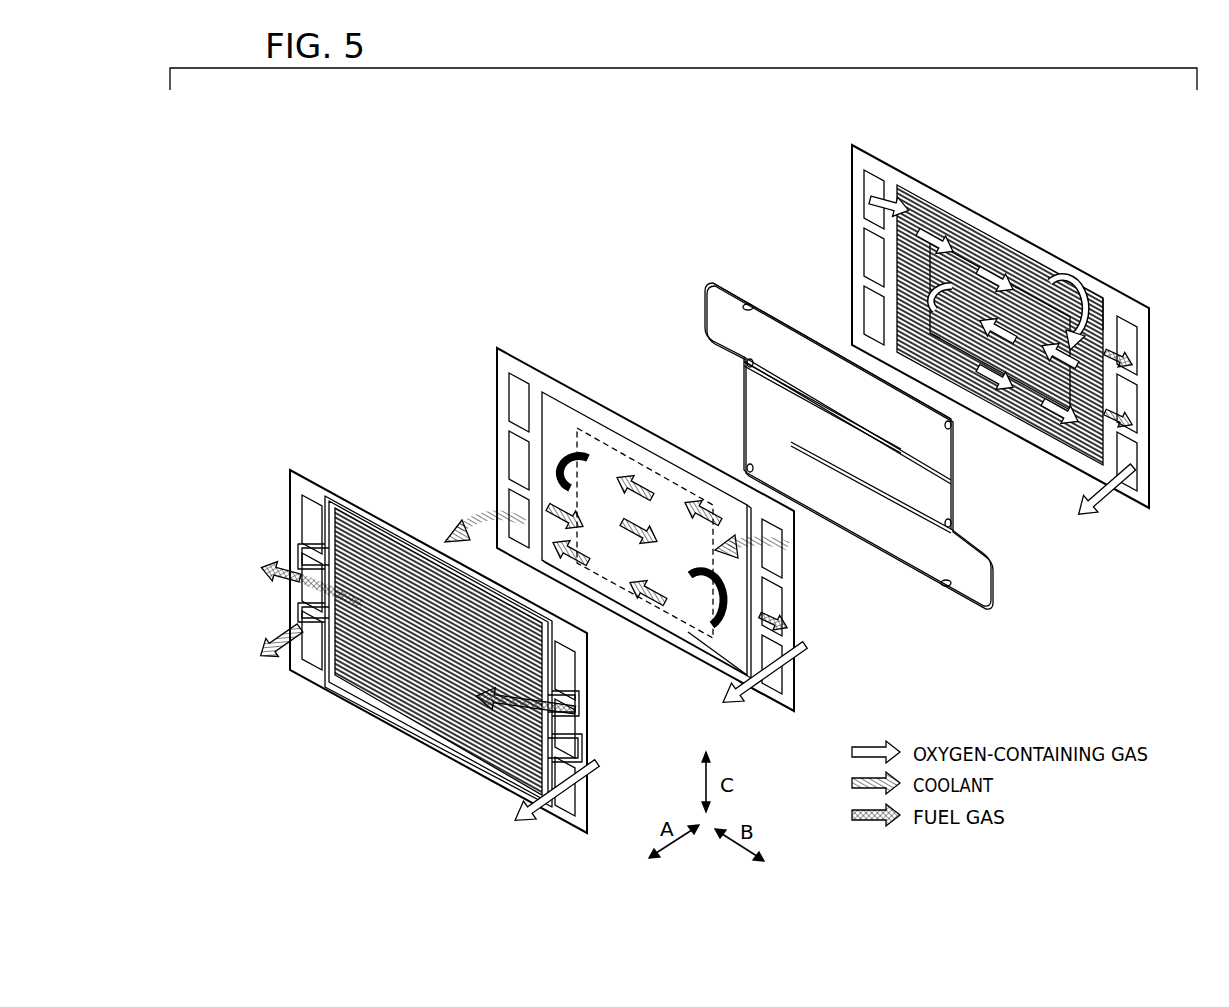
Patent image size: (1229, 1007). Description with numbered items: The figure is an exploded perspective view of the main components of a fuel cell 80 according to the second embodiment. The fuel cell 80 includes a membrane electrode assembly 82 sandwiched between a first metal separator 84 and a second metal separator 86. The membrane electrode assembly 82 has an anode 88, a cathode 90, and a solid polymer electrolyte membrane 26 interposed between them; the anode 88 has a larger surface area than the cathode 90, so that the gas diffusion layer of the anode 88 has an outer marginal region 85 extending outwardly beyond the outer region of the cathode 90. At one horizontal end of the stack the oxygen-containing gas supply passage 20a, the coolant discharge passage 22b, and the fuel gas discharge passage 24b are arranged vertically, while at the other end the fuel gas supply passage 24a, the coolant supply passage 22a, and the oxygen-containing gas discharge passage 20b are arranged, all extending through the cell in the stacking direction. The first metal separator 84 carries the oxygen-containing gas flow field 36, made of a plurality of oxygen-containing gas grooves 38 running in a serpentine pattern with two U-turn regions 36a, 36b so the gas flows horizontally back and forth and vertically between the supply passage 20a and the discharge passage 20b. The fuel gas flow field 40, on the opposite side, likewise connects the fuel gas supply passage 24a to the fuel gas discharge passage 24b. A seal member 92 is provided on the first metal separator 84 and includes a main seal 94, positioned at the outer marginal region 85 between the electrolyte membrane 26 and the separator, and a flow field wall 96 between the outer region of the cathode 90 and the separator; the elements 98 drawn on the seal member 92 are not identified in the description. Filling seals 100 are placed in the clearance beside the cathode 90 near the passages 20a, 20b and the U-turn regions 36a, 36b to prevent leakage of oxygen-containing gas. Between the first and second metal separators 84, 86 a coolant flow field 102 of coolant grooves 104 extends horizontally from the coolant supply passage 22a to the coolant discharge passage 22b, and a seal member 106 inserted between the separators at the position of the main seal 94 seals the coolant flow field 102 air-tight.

The fuel cell 80 is at (601, 256).
The membrane electrode assembly 82 is at (495, 345).
The first metal separator 84 is at (851, 142).
The second metal separator 86 is at (288, 466).
The anode 88 is at (560, 425).
The cathode 90 is at (662, 468).
The outer marginal region 85 is at (688, 632).
The solid polymer electrolyte membrane 26 is at (763, 700).
The seal member 92 is at (707, 280).
The main seal 94 is at (761, 302).
The flow field wall 96 is at (787, 336).
The bridge 98 is at (813, 450).
The filling seals 100 is at (745, 309).
The oxygen-containing gas flow field 36 is at (975, 237).
The U-turn region 36a is at (1108, 318).
The U-turn region 36b is at (935, 330).
The oxygen-containing gas grooves 38 is at (1070, 305).
The fuel gas flow field 40 is at (412, 528).
The coolant flow field 102 is at (368, 530).
The coolant grooves 104 is at (358, 685).
The seal member 106 is at (392, 703).
The oxygen-containing gas supply passage 20a is at (307, 523).
The oxygen-containing gas discharge passage 20b is at (568, 798).
The coolant supply passage 22a is at (568, 738).
The coolant discharge passage 22b is at (307, 577).
The fuel gas supply passage 24a is at (568, 676).
The fuel gas discharge passage 24b is at (307, 640).